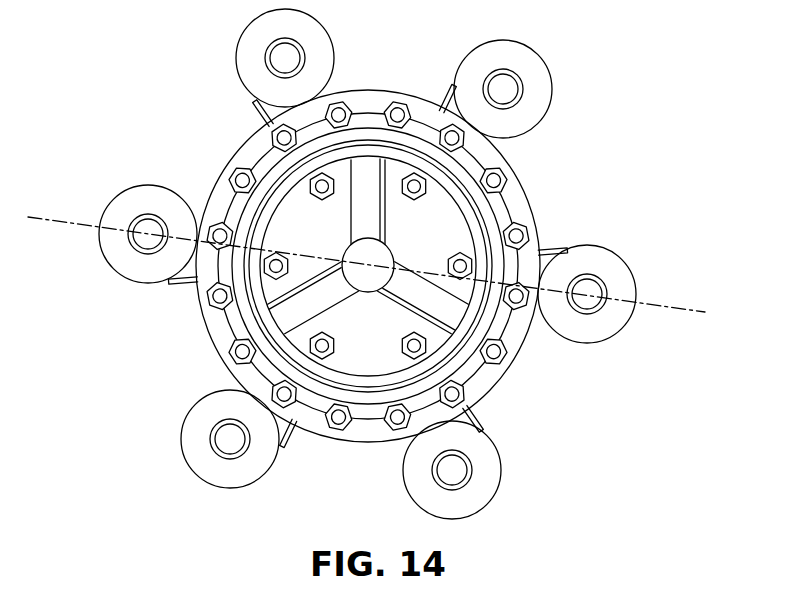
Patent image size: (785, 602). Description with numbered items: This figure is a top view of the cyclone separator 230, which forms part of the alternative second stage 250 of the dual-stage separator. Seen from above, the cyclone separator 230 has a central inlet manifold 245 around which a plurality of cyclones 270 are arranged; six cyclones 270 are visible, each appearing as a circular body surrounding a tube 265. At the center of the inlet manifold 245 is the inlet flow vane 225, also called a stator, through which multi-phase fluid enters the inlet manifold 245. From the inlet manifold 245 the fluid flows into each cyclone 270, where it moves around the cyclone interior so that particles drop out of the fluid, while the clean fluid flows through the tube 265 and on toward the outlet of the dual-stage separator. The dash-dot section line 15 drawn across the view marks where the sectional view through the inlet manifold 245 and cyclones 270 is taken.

The section line 15- 15 is at (28, 217).
The inlet flow vane 225 is at (366, 226).
The cyclone separator 230 is at (560, 423).
The inlet manifold 245 is at (435, 197).
The second stage 250 is at (112, 422).
The tube 265 is at (438, 487).
The cyclone 270 is at (472, 492).